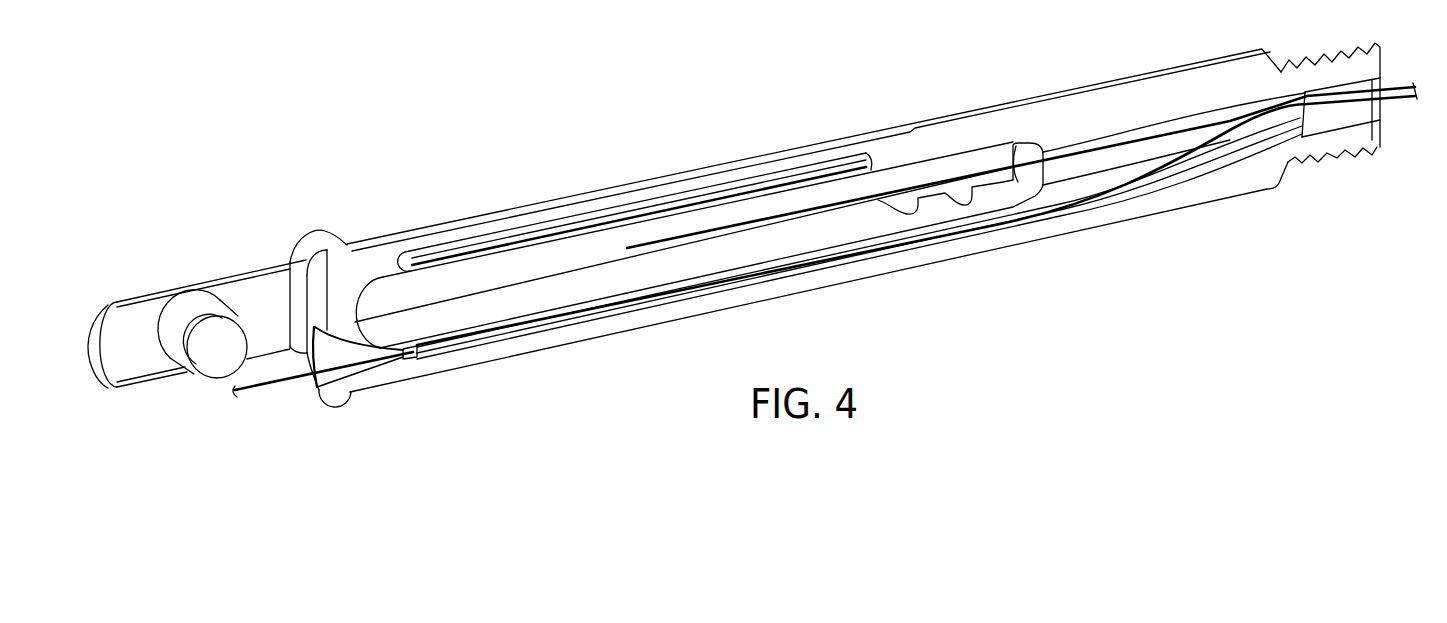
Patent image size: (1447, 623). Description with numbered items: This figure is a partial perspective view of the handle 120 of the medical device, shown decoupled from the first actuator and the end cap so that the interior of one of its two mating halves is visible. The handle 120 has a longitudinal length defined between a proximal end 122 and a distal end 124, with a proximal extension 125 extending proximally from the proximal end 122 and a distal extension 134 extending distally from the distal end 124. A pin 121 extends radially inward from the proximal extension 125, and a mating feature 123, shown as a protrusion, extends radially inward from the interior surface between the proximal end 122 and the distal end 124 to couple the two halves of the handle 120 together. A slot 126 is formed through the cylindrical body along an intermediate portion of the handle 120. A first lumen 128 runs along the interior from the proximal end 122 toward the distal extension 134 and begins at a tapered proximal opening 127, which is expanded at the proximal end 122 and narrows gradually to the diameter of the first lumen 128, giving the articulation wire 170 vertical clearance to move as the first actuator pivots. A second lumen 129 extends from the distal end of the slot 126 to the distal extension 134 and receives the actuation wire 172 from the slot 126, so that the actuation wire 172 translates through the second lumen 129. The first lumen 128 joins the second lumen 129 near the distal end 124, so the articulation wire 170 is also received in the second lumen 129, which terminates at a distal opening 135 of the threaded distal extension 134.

The handle 120 is at (255, 180).
The pin 121 is at (210, 333).
The proximal end 122 is at (340, 245).
The mating feature 123 is at (767, 178).
The distal end 124 is at (1276, 60).
The proximal extension 125 is at (118, 322).
The slot 126 is at (483, 277).
The proximal opening 127 is at (316, 388).
The first lumen 128 is at (928, 250).
The second lumen 129 is at (1100, 137).
The distal extension 134 is at (1345, 183).
The distal opening 135 is at (1383, 107).
The articulation wire 170 is at (252, 408).
The actuation wire 172 is at (660, 228).